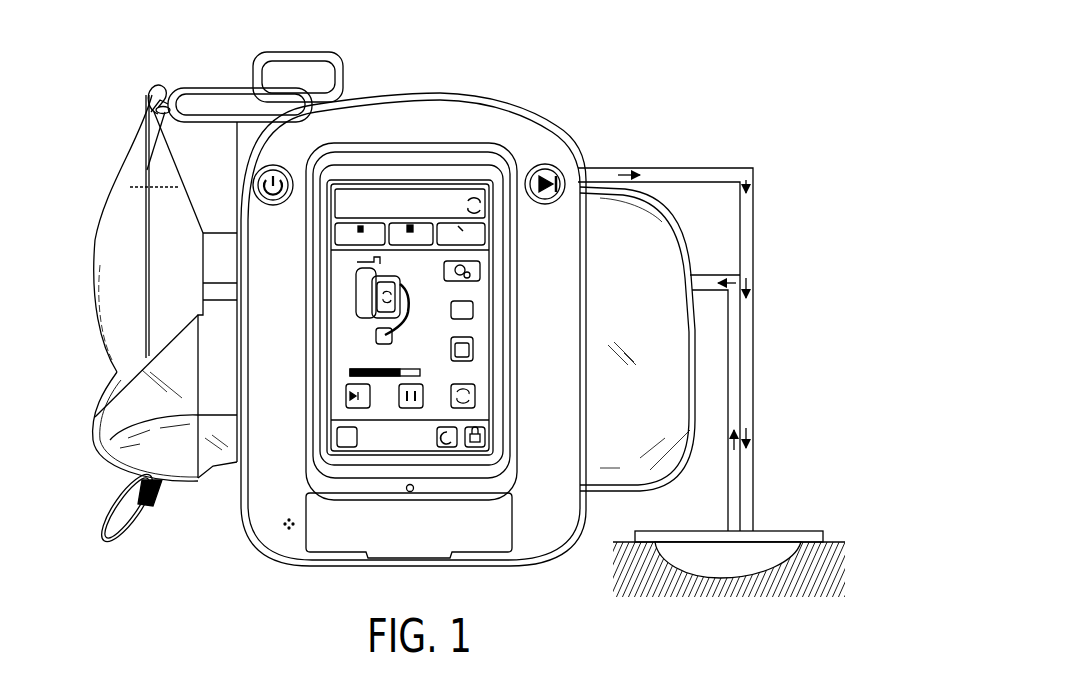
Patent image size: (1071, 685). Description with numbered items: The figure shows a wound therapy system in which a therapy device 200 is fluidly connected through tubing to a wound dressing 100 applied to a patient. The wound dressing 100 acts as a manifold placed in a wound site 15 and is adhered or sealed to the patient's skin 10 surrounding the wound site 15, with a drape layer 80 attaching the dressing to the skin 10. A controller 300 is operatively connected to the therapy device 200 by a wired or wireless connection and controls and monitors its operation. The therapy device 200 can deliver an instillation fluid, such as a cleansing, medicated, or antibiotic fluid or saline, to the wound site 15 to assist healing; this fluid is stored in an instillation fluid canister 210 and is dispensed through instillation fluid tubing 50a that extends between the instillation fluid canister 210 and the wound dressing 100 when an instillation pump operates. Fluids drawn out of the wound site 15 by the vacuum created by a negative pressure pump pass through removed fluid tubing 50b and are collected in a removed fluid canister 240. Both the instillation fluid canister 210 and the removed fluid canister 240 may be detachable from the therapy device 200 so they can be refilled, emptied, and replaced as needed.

The therapy device 200 is at (690, 56).
The instillation fluid canister 210 is at (107, 250).
The controller 300 is at (557, 127).
The removed fluid canister 240 is at (597, 498).
The instillation fluid tubing 50a is at (700, 168).
The removed fluid tubing 50b is at (704, 275).
The drape layer 80 is at (780, 531).
The patient's skin 10 is at (840, 542).
The wound site 15 is at (665, 582).
The wound dressing 100 is at (755, 560).